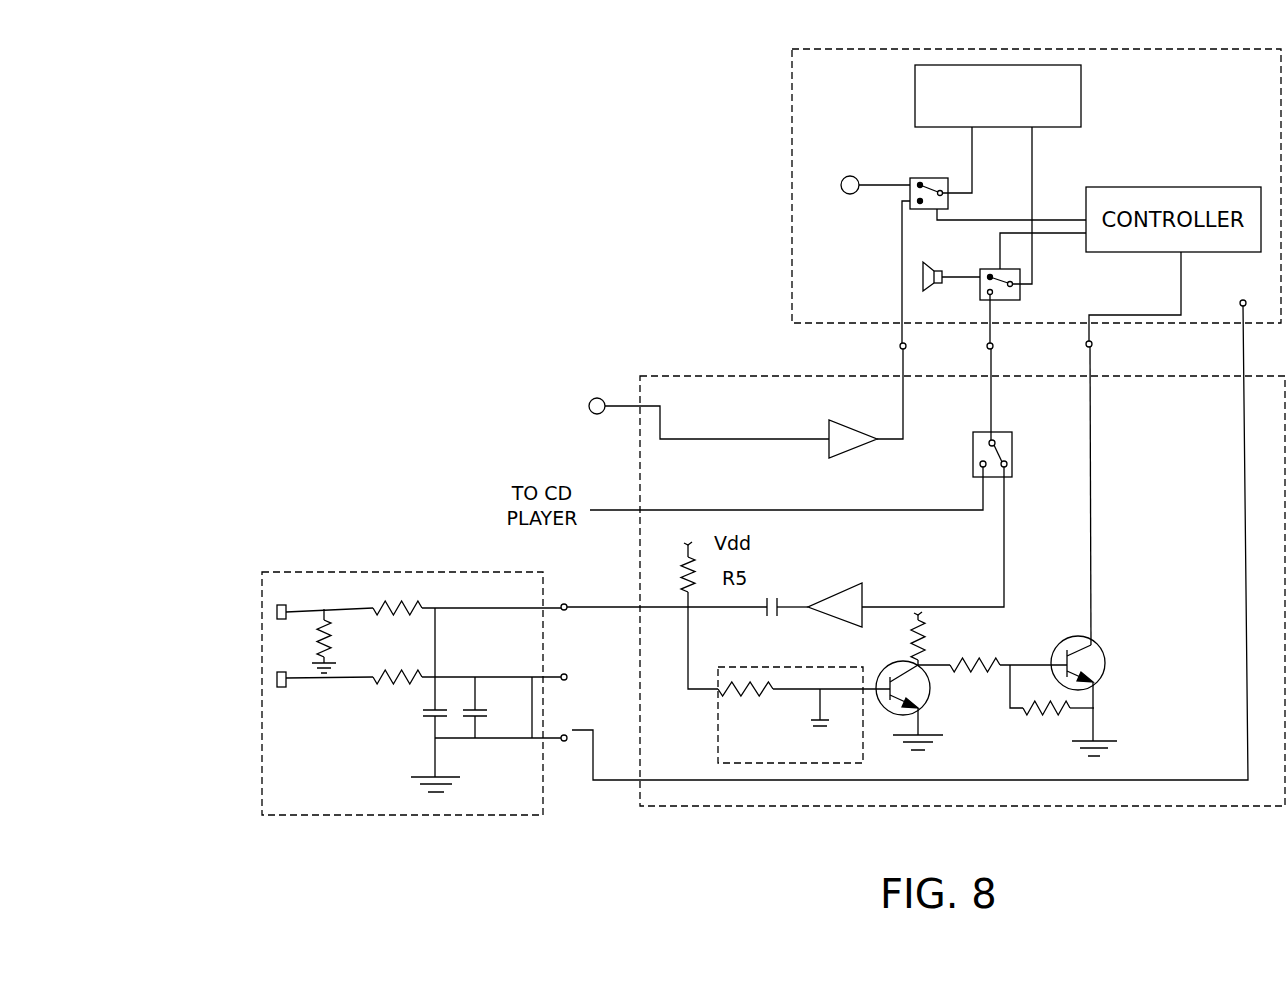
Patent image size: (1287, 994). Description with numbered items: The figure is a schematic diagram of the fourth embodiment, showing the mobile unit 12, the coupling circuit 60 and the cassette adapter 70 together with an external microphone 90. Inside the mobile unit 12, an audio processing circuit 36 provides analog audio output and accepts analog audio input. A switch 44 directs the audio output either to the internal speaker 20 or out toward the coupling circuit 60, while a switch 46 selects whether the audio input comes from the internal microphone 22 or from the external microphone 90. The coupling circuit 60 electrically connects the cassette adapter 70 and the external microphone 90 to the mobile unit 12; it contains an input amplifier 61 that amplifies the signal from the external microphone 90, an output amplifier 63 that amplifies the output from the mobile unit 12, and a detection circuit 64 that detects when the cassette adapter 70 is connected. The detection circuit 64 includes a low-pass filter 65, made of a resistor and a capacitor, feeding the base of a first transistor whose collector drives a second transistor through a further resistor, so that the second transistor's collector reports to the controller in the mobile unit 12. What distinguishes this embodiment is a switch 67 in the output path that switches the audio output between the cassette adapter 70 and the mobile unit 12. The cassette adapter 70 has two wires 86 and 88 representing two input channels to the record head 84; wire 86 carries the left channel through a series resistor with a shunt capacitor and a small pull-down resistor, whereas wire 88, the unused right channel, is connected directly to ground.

The mobile unit 12 is at (792, 120).
The audio processing circuit 36 is at (1083, 102).
The microphone 22 is at (850, 176).
The switch 46 is at (920, 178).
The speaker 20 is at (922, 277).
The switch 44 is at (987, 268).
The coupling circuit 60 is at (768, 376).
The input amplifier 61 is at (860, 428).
The switch 67 is at (1014, 445).
The external microphone 90 is at (590, 400).
The output amplifier 63 is at (848, 590).
The low-pass filter 65 is at (775, 667).
The detection circuit 64 is at (1016, 752).
The cassette adapter 70 is at (432, 572).
The record head 84 is at (277, 679).
The wire 86 is at (458, 606).
The wire 88 is at (352, 682).